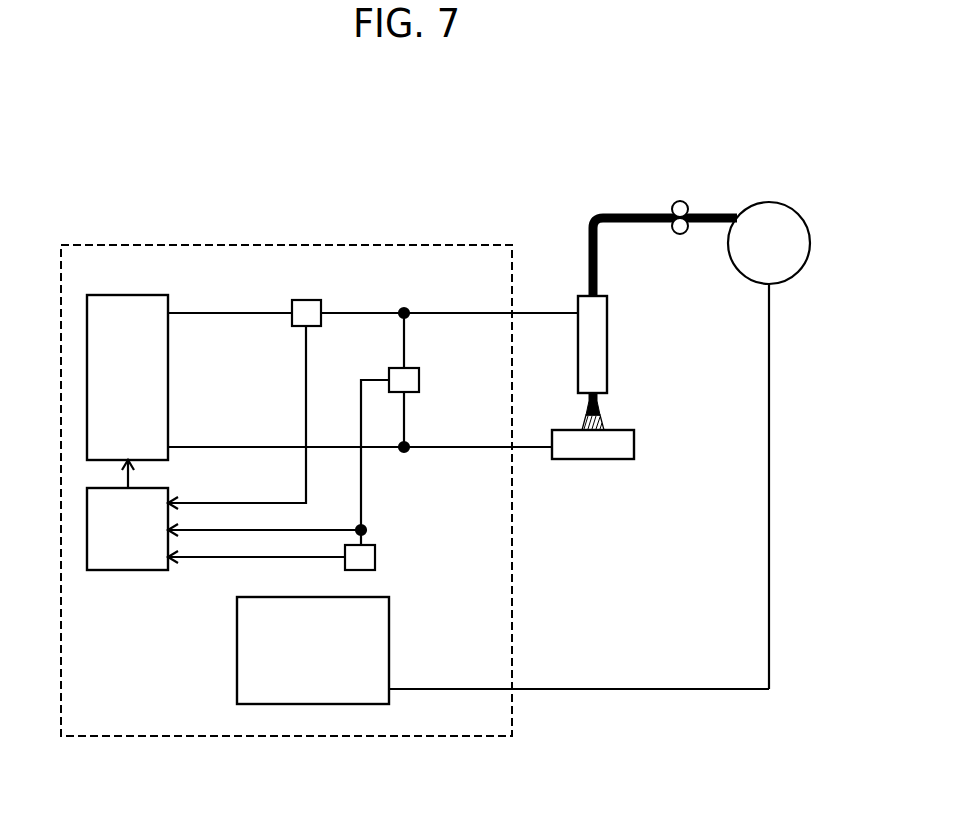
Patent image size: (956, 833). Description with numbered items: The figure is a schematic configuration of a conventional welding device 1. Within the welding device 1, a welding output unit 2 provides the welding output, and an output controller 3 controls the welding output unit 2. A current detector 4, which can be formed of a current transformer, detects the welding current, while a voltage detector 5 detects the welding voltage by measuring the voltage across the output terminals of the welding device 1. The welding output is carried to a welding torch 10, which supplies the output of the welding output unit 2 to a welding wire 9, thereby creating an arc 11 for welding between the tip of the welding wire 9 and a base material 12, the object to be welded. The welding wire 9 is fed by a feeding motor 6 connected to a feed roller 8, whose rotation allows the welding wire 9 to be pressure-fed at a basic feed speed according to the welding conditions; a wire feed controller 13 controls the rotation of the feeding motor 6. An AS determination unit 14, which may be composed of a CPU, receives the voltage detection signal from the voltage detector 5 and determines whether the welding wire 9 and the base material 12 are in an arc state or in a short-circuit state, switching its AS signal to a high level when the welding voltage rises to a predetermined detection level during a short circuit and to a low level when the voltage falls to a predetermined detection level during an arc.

The welding device 1 is at (410, 736).
The welding output unit 2 is at (129, 295).
The output controller 3 is at (102, 573).
The current detector 4 is at (308, 300).
The voltage detector 5 is at (420, 380).
The feeding motor 6 is at (765, 202).
The feed roller 8 is at (677, 200).
The welding wire 9 is at (602, 213).
The welding torch 10 is at (608, 353).
The arc 11 is at (603, 419).
The base material 12 is at (600, 460).
The wire feed controller 13 is at (237, 680).
The AS determination unit 14 is at (377, 557).